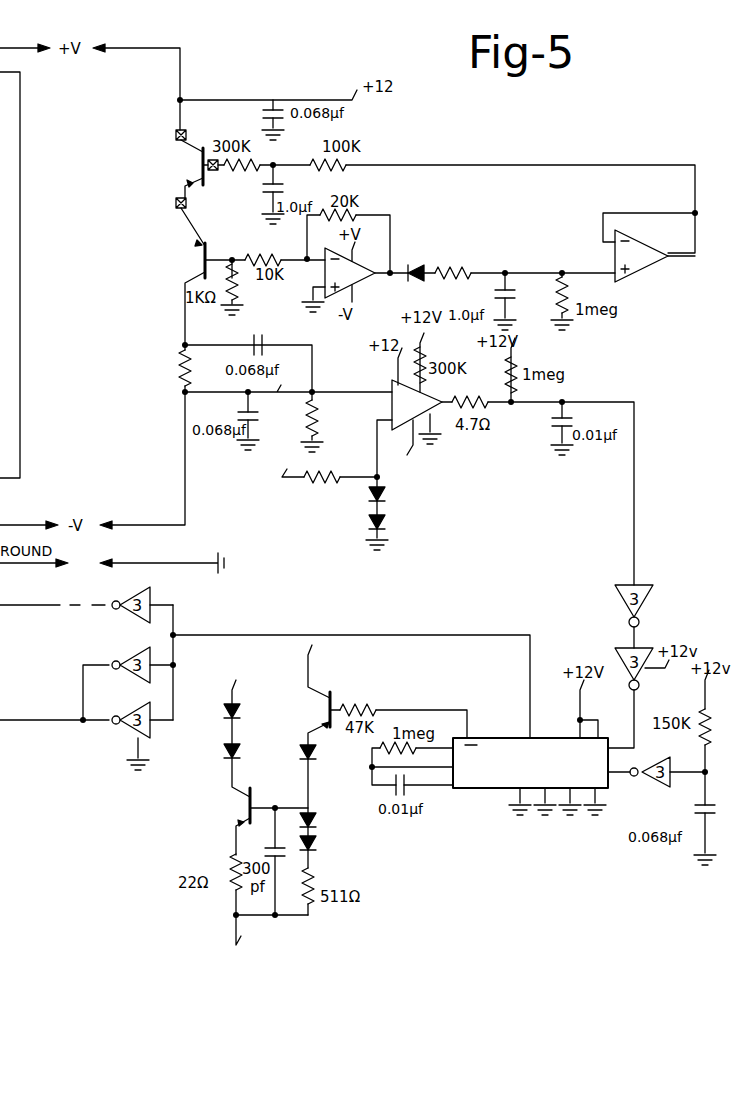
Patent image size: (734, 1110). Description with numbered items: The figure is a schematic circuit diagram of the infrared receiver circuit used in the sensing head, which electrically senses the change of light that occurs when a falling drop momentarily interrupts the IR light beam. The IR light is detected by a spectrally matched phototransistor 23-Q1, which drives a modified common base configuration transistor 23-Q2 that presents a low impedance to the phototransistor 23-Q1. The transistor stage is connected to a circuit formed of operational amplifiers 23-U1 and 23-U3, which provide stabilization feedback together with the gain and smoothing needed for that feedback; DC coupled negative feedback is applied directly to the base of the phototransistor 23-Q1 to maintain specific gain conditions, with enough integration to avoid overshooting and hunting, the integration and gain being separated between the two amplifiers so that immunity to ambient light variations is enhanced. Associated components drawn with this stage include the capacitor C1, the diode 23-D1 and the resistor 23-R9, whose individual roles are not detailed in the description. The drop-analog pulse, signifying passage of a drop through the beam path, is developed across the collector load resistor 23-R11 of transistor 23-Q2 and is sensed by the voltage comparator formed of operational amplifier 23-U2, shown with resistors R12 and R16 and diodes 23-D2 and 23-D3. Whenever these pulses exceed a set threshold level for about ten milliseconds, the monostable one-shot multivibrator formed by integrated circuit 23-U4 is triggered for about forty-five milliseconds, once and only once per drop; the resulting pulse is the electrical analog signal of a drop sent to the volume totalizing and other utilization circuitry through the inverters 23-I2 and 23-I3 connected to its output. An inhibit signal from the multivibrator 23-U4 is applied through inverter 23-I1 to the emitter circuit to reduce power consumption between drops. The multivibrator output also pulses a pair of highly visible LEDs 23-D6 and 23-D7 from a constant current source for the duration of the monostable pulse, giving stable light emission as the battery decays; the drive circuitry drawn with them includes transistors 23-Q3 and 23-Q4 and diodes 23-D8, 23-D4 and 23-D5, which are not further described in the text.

The phototransistor 23-Q1 is at (164, 164).
The common base configuration transistor 23-Q2 is at (168, 271).
The capacitor C1 is at (256, 194).
The collector load resistor 23-R11 is at (150, 370).
The operational amplifier 23-U1 is at (370, 275).
The diode D1 23-D1 is at (411, 250).
The resistor R9 23-R9 is at (455, 249).
The operational amplifier 23-U3 is at (617, 247).
The operational amplifier 23-U2 is at (382, 394).
The resistor R12 is at (330, 422).
The resistor R16 is at (329, 479).
The diode D2 23-D2 is at (407, 490).
The diode D3 23-D3 is at (338, 525).
The inverter 23-I1 is at (103, 601).
The inverter 23-I2 is at (120, 678).
The inverter 23-I3 is at (86, 736).
The LED 23-D6 is at (215, 700).
The LED 23-D7 is at (211, 748).
The transistor Q4 23-Q4 is at (219, 821).
The transistor Q3 23-Q3 is at (297, 695).
The diode D8 23-D8 is at (321, 749).
The diode D4 23-D4 is at (323, 807).
The diode D5 23-D5 is at (338, 845).
The monostable one-shot multivibrator 23-U4 is at (526, 778).